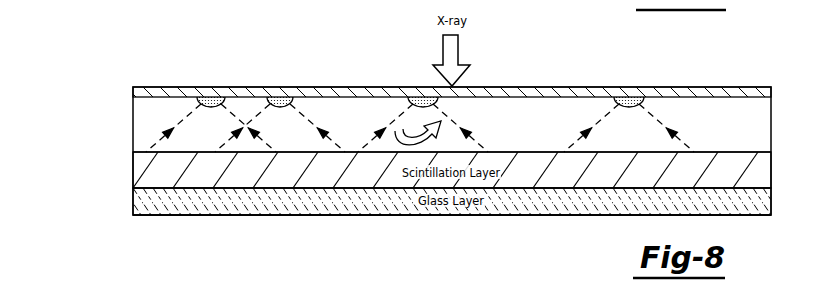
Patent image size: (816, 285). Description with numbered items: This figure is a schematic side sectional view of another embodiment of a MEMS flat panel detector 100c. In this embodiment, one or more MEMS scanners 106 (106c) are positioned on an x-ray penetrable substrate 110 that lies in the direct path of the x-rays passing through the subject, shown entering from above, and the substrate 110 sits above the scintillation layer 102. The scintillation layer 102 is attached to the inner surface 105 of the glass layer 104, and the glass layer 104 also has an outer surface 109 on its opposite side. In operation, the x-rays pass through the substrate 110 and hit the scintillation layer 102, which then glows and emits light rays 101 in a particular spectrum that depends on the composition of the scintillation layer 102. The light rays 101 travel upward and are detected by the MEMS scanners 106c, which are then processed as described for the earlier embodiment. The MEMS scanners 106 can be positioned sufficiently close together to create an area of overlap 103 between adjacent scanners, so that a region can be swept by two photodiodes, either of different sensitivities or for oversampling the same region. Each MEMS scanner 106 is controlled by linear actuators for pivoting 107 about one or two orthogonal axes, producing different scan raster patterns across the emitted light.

The MEMS flat panel detector 100c is at (513, 76).
The x-ray penetrable substrate 110 is at (712, 87).
The light rays 101 is at (686, 142).
The MEMS scanner 106 is at (433, 70).
The MEMS scanner 106c is at (423, 94).
The area of overlap 103 is at (247, 142).
The pivoting 107 is at (453, 134).
The scintillation layer 102 is at (132, 172).
The inner surface 105 is at (549, 188).
The glass layer 104 is at (132, 203).
The outer surface 109 is at (558, 216).